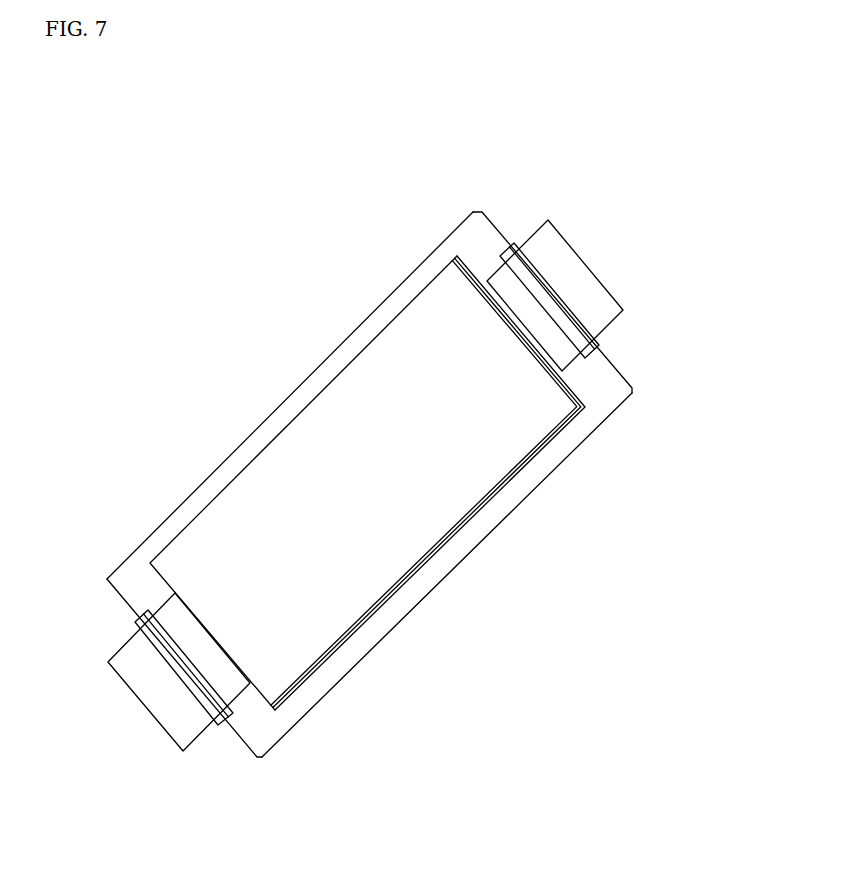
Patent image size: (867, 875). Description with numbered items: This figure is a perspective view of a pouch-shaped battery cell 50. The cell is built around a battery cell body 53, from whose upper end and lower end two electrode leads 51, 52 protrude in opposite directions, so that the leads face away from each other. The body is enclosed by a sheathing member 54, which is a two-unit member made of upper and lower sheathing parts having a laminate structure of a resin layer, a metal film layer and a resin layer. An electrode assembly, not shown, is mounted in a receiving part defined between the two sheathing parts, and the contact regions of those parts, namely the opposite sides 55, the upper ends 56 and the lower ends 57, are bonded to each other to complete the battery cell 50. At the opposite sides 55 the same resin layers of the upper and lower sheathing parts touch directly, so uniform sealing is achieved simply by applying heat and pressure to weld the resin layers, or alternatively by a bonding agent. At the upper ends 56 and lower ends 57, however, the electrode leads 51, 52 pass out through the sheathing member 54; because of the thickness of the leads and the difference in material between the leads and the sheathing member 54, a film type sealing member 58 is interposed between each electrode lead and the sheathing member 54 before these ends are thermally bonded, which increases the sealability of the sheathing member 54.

The pouch-shaped battery cell 50 is at (97, 218).
The electrode lead 51 is at (163, 705).
The electrode lead 52 is at (588, 272).
The battery cell body 53 is at (317, 425).
The sheathing member 54 is at (462, 223).
The opposite sides 55 is at (463, 543).
The upper ends 56 is at (137, 575).
The lower ends 57 is at (612, 392).
The film type sealing member 58 is at (513, 243).